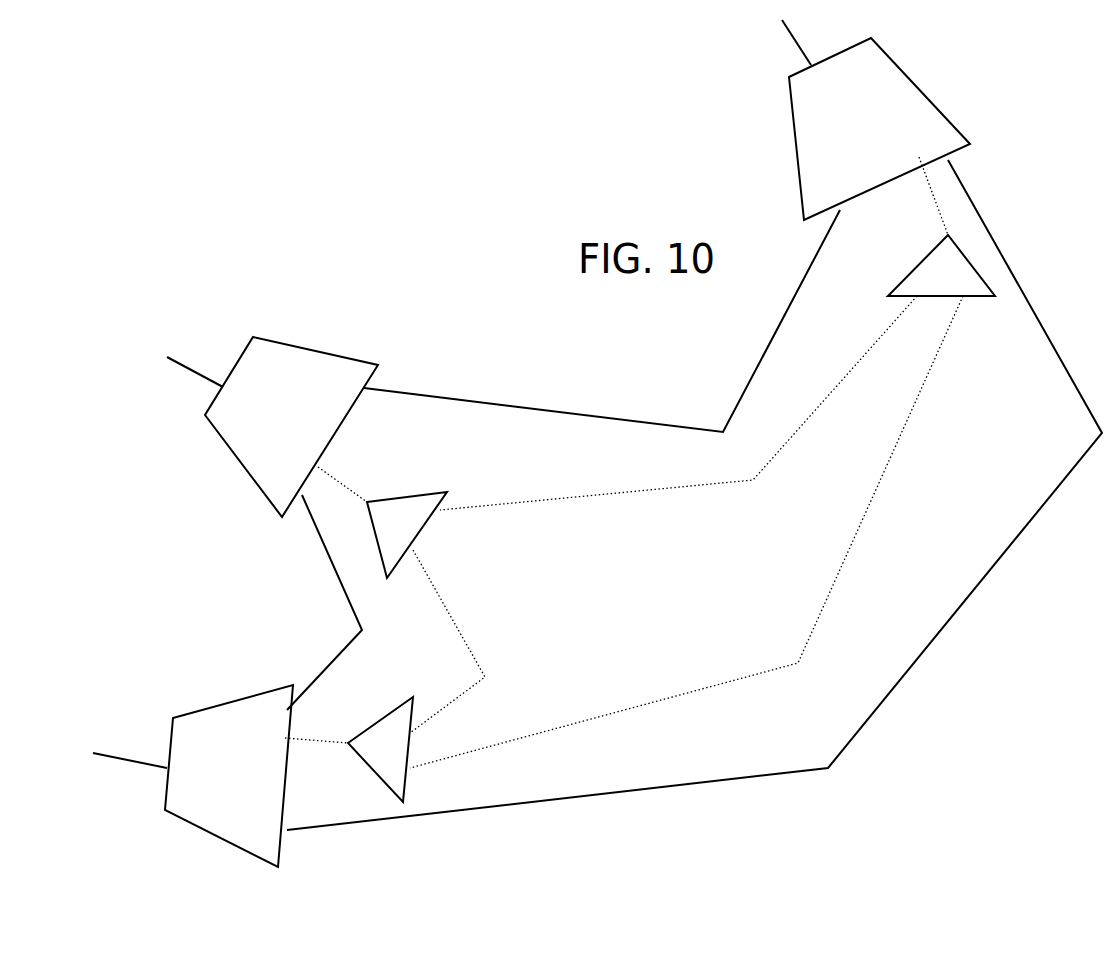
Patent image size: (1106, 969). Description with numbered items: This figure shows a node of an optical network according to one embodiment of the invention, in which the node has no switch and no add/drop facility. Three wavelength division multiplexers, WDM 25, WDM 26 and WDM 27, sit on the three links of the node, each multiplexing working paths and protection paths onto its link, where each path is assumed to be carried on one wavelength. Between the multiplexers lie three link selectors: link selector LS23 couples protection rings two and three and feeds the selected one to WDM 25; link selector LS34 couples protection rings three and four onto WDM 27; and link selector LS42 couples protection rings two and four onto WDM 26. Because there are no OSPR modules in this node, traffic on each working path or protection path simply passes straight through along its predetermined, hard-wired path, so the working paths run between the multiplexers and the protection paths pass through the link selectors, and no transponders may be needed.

The wavelength division multiplexer 25 is at (291, 427).
The wavelength division multiplexer 26 is at (229, 776).
The wavelength division multiplexer 27 is at (879, 129).
The link selector LS23 is at (433, 535).
The link selector LS34 is at (913, 265).
The link selector LS42 is at (386, 732).